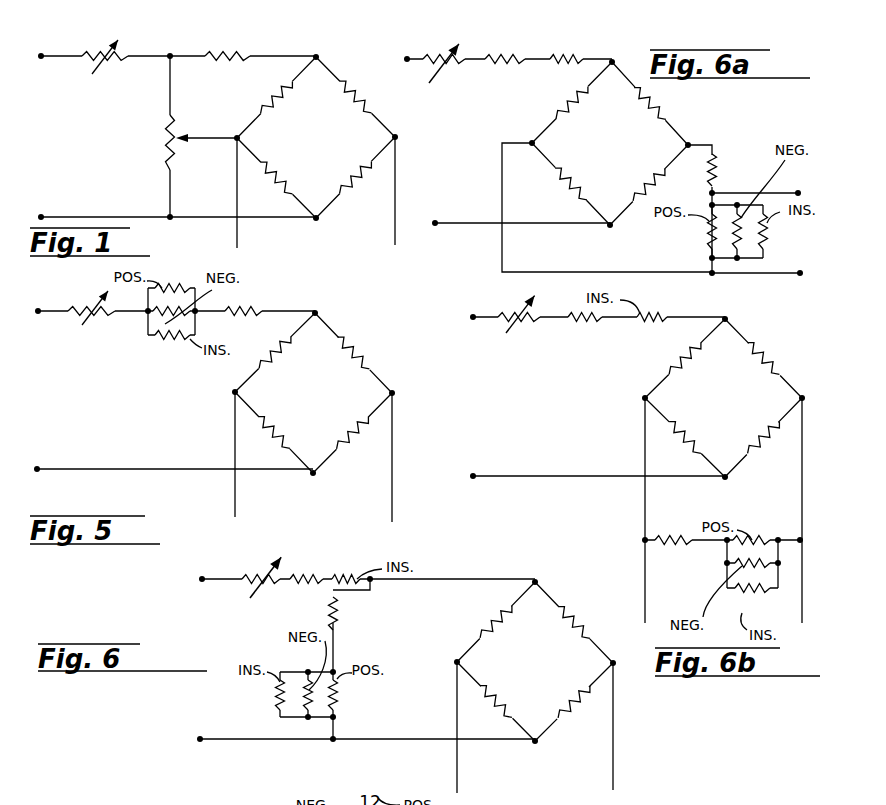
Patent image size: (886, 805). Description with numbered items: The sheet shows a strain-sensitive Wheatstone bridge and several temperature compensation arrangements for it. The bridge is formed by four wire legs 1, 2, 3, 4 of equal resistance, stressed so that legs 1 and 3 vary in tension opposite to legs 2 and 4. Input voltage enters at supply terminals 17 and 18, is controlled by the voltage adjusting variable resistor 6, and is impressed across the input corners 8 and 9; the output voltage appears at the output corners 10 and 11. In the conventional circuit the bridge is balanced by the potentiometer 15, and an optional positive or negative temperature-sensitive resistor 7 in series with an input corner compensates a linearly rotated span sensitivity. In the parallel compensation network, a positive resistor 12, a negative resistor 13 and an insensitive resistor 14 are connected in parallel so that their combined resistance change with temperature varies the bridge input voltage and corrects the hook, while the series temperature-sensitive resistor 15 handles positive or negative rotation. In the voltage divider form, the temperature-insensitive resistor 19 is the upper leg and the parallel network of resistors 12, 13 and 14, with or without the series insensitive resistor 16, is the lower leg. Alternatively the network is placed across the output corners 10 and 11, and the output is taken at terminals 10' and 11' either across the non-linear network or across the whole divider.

In FIG. 1, the bridge leg 1 is at (285, 88).
In FIG. 5, the bridge leg 1 is at (281, 352).
In FIG. 6, the bridge leg 1 is at (501, 624).
In FIG. 6A, the bridge leg 1 is at (572, 98).
In FIG. 6B, the bridge leg 1 is at (688, 361).
In FIG. 1, the bridge leg 2 is at (362, 94).
In FIG. 5, the bridge leg 2 is at (348, 357).
In FIG. 6, the bridge leg 2 is at (568, 625).
In FIG. 6A, the bridge leg 2 is at (658, 99).
In FIG. 6B, the bridge leg 2 is at (754, 361).
In FIG. 1, the bridge leg 3 is at (352, 174).
In FIG. 5, the bridge leg 3 is at (347, 428).
In FIG. 6, the bridge leg 3 is at (572, 703).
In FIG. 6A, the bridge leg 3 is at (646, 181).
In FIG. 6B, the bridge leg 3 is at (758, 438).
In FIG. 1, the bridge leg 4 is at (270, 164).
In FIG. 5, the bridge leg 4 is at (278, 423).
In FIG. 6, the bridge leg 4 is at (501, 700).
In FIG. 6A, the bridge leg 4 is at (573, 174).
In FIG. 6B, the bridge leg 4 is at (692, 435).
In FIG. 1, the variable resistor 6 is at (122, 41).
In FIG. 5, the variable resistor 6 is at (96, 304).
In FIG. 6, the variable resistor 6 is at (268, 574).
In FIG. 6A, the variable resistor 6 is at (441, 53).
In FIG. 6B, the variable resistor 6 is at (519, 314).
In FIG. 1, the temperature-sensitive resistor 7 is at (240, 54).
In FIG. 1, the input corner 8 is at (317, 55).
In FIG. 5, the input corner 8 is at (316, 311).
In FIG. 6, the input corner 8 is at (536, 580).
In FIG. 6A, the input corner 8 is at (613, 60).
In FIG. 6B, the input corner 8 is at (726, 318).
In FIG. 1, the input corner 9 is at (317, 225).
In FIG. 5, the input corner 9 is at (314, 478).
In FIG. 6, the input corner 9 is at (537, 746).
In FIG. 6A, the input corner 9 is at (612, 228).
In FIG. 6B, the input corner 9 is at (727, 481).
In FIG. 1, the output corner 10 is at (410, 137).
In FIG. 5, the output corner 10 is at (408, 398).
In FIG. 6, the output corner 10 is at (627, 655).
In FIG. 6A, the output corner 10 is at (701, 134).
In FIG. 6B, the output corner 10 is at (812, 383).
In FIG. 1, the output corner 11 is at (220, 152).
In FIG. 5, the output corner 11 is at (215, 400).
In FIG. 6, the output corner 11 is at (438, 663).
In FIG. 6A, the output corner 11 is at (522, 132).
In FIG. 6B, the output corner 11 is at (625, 405).
In FIG. 5, the positive resistor 12 is at (182, 287).
In FIG. 6, the positive resistor 12 is at (340, 690).
In FIG. 6A, the positive resistor 12 is at (706, 235).
In FIG. 6B, the positive resistor 12 is at (754, 538).
In FIG. 5, the negative resistor 13 is at (148, 317).
In FIG. 6, the negative resistor 13 is at (296, 673).
In FIG. 6A, the negative resistor 13 is at (747, 247).
In FIG. 6B, the negative resistor 13 is at (727, 563).
In FIG. 5, the insensitive resistor 14 is at (166, 338).
In FIG. 6, the insensitive resistor 14 is at (278, 696).
In FIG. 6A, the insensitive resistor 14 is at (772, 230).
In FIG. 6B, the insensitive resistor 14 is at (747, 592).
In FIG. 1, the potentiometer 15 is at (167, 135).
In FIG. 5, the potentiometer 15 is at (254, 309).
In FIG. 6, the potentiometer 15 is at (298, 574).
In FIG. 6A, the potentiometer 15 is at (502, 52).
In FIG. 6B, the potentiometer 15 is at (587, 325).
In FIG. 6, the insensitive resistor 16 is at (341, 613).
In FIG. 6A, the insensitive resistor 16 is at (720, 168).
In FIG. 6B, the insensitive resistor 16 is at (678, 545).
In FIG. 1, the supply terminal 17 is at (44, 55).
In FIG. 5, the supply terminal 17 is at (42, 309).
In FIG. 6, the supply terminal 17 is at (206, 578).
In FIG. 6A, the supply terminal 17 is at (409, 58).
In FIG. 6B, the supply terminal 17 is at (472, 315).
In FIG. 1, the supply terminal 18 is at (40, 213).
In FIG. 5, the supply terminal 18 is at (38, 472).
In FIG. 6, the supply terminal 18 is at (205, 737).
In FIG. 6A, the supply terminal 18 is at (437, 226).
In FIG. 6B, the supply terminal 18 is at (473, 480).
In FIG. 6, the temperature-insensitive resistor 19 is at (348, 576).
In FIG. 6A, the temperature-insensitive resistor 19 is at (563, 54).
In FIG. 6B, the temperature-insensitive resistor 19 is at (652, 324).
In FIG. 6A, the output terminal 10' is at (810, 181).
In FIG. 6B, the output terminal 10' is at (776, 611).
In FIG. 6A, the output terminal 11' is at (810, 259).
In FIG. 6B, the output terminal 11' is at (670, 600).